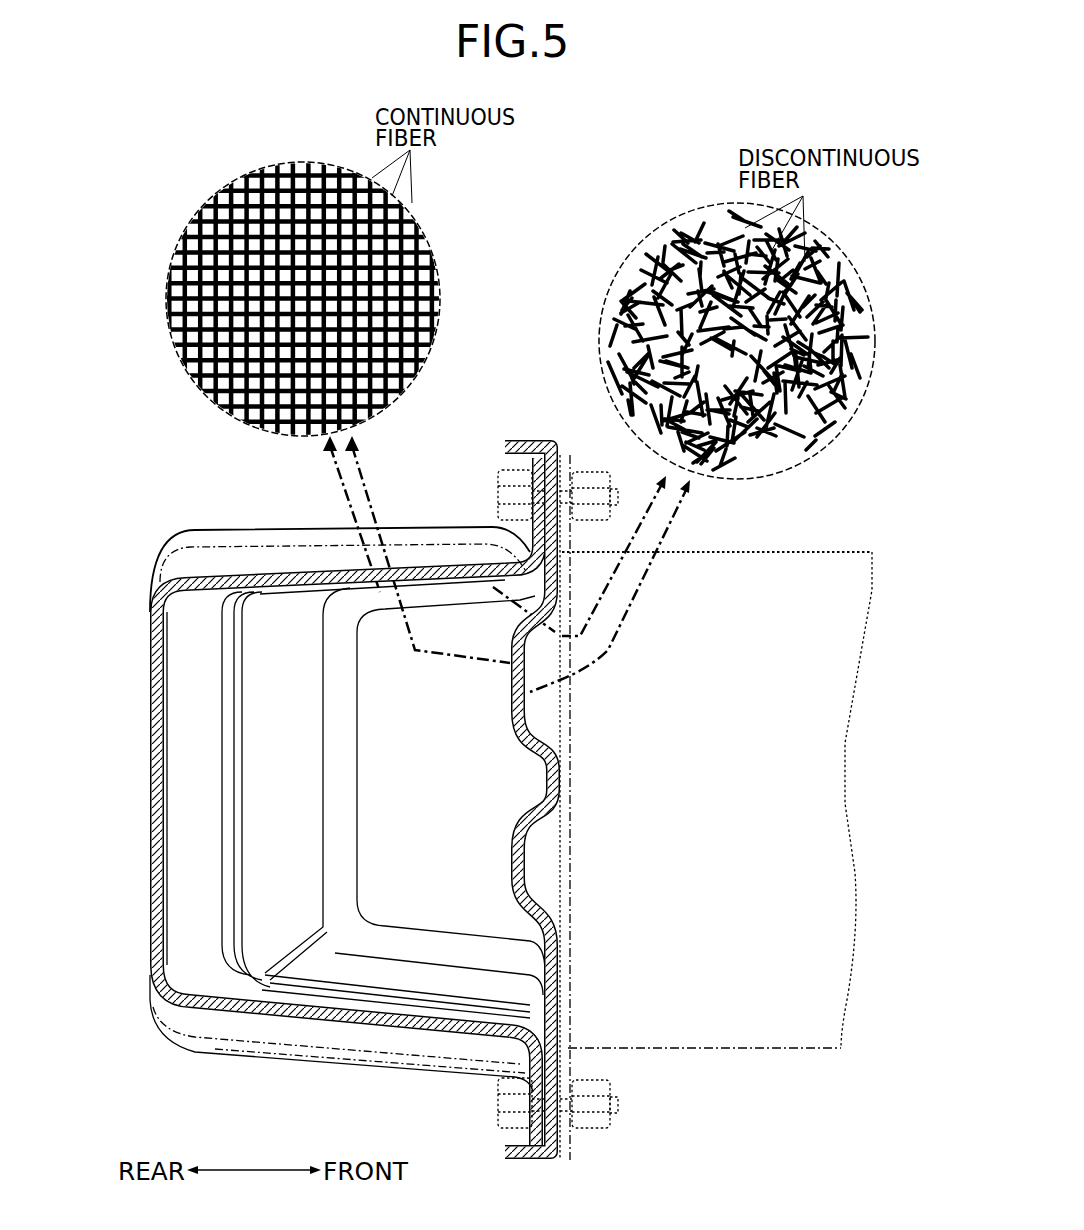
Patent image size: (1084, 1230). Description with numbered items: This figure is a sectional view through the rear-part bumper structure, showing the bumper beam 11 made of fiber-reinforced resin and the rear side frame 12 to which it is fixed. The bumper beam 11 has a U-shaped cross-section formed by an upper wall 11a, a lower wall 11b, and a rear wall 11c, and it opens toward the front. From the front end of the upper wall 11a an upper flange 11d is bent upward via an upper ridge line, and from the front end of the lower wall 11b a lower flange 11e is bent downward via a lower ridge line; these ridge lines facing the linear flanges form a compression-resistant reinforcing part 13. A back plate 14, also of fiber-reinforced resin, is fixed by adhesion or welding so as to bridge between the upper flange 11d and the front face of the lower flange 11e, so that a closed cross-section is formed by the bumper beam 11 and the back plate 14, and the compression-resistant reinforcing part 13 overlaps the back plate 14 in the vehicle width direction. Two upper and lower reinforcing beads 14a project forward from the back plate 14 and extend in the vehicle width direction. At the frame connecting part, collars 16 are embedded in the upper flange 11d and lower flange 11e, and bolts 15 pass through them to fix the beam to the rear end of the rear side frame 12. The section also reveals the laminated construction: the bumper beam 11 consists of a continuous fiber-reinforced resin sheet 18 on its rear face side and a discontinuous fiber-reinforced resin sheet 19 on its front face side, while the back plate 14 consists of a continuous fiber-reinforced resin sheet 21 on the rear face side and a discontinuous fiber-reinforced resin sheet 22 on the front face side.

The bumper beam 11 is at (317, 779).
The upper wall 11a is at (270, 574).
The lower wall 11b is at (265, 1012).
The rear wall 11c is at (150, 820).
The upper flange 11d is at (530, 548).
The lower flange 11e is at (505, 1062).
The rear side frame 12 is at (775, 1050).
The compression-resistant reinforcing part 13 is at (562, 598).
The back plate 14 is at (557, 799).
The reinforcing bead 14a is at (512, 690).
The bolt 15 is at (500, 488).
The collar 16 is at (563, 458).
The continuous fiber-reinforced resin sheet 18 is at (150, 730).
The discontinuous fiber-reinforced resin sheet 19 is at (164, 750).
The continuous fiber-reinforced resin sheet 21 is at (515, 705).
The discontinuous fiber-reinforced resin sheet 22 is at (532, 712).